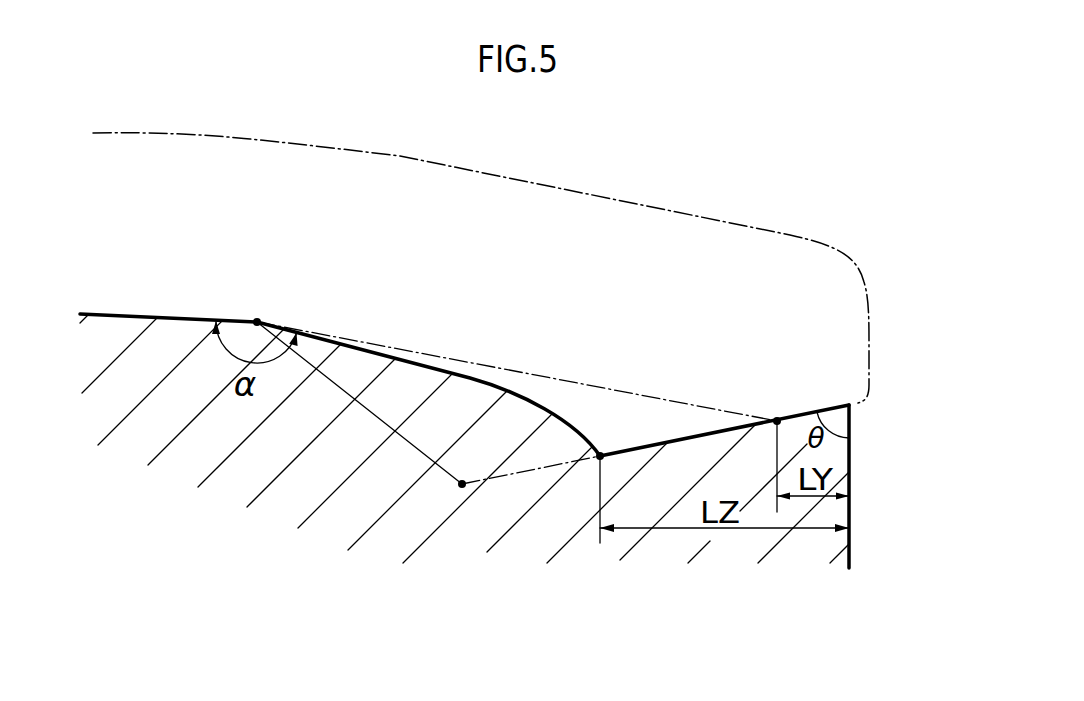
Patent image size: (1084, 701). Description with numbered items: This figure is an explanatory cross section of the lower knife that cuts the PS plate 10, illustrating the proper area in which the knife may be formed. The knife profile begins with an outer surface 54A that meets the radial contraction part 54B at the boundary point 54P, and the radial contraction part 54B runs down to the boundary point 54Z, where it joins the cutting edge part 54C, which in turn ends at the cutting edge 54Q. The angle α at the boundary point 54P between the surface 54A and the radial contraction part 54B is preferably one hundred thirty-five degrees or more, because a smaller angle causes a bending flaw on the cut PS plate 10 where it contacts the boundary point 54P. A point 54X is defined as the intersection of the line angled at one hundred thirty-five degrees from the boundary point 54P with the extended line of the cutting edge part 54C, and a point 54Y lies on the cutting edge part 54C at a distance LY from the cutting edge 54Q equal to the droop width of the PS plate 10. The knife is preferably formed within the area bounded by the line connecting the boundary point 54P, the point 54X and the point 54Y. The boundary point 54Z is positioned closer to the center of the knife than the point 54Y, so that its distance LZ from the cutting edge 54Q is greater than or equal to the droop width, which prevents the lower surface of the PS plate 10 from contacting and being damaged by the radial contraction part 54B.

The PS plate 10 is at (848, 263).
The outer surface of the lower knife 54A is at (138, 313).
The radial contraction part 54B is at (418, 362).
The cutting edge part 54C is at (660, 444).
The boundary point 54P is at (257, 318).
The cutting edge 54Q is at (853, 405).
The point 54X is at (462, 487).
The point 54Y is at (777, 418).
The boundary point 54Z is at (598, 460).